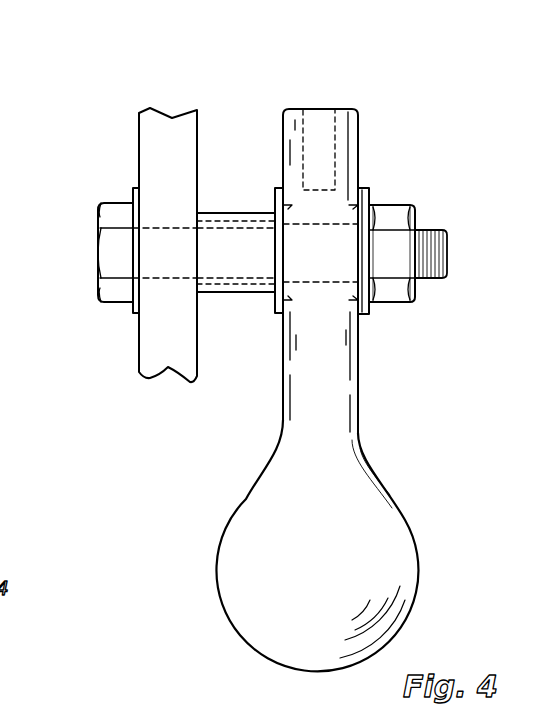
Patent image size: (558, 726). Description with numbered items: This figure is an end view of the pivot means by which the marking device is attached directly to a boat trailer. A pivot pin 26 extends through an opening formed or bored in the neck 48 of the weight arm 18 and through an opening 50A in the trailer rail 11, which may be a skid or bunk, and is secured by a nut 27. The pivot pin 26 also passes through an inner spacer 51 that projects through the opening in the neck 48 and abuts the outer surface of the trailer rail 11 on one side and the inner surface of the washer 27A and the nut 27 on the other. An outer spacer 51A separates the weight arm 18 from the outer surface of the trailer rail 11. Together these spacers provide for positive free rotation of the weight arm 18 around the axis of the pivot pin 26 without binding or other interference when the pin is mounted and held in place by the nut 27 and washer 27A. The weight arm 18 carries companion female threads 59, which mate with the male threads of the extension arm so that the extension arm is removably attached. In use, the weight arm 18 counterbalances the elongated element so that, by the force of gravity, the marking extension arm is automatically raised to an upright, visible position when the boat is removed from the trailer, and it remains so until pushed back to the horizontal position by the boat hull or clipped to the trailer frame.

The trailer rail 11 is at (172, 148).
The weight arm 18 is at (412, 528).
The pivot pin 26 is at (448, 263).
The nut 27 is at (402, 202).
The washer 27A is at (365, 316).
The neck 48 is at (313, 257).
The opening 50A is at (178, 226).
The inner spacer 51 is at (322, 222).
The outer spacer 51A is at (247, 292).
The female threads 59 is at (322, 130).